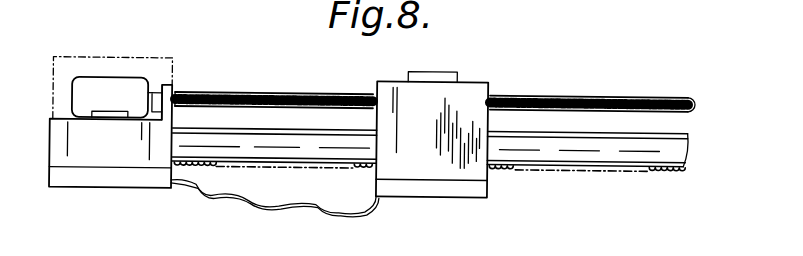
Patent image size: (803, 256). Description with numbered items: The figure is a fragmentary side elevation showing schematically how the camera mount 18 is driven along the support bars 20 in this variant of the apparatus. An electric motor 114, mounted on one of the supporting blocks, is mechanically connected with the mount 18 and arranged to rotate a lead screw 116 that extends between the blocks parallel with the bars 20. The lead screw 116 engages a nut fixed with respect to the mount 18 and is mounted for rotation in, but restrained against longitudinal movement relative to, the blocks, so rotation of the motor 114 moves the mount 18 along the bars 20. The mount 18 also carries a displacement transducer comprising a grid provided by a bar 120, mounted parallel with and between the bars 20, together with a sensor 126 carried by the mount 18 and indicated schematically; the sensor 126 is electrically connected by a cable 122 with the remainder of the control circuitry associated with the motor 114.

The camera mount 18 is at (463, 89).
The support bars 20 is at (195, 145).
The electric motor 114 is at (112, 87).
The lead screw 116 is at (293, 95).
The bar 120 is at (512, 164).
The cable 122 is at (208, 200).
The sensor 126 is at (457, 185).